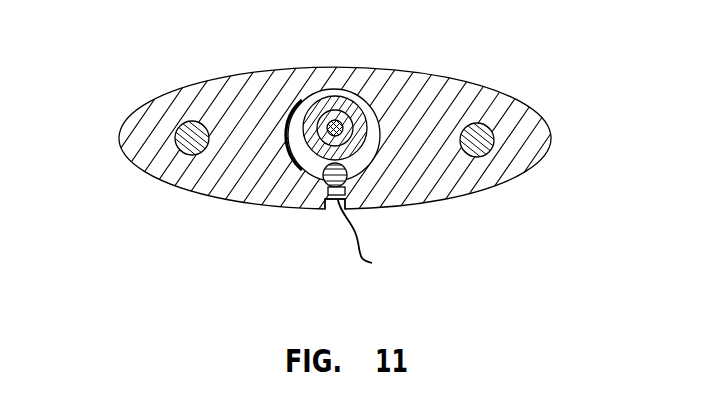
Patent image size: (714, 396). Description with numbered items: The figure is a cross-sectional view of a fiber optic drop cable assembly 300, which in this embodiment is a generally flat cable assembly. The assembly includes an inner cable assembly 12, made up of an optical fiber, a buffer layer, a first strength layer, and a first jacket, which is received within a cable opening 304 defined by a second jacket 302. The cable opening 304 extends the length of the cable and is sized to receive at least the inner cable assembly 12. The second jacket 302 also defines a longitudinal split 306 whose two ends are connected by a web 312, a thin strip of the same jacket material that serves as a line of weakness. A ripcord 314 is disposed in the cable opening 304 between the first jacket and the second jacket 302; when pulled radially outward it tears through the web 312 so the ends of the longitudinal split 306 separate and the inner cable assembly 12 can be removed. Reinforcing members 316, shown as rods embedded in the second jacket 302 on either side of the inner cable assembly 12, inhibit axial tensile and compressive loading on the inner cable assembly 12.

The fiber optic drop cable assembly 300 is at (364, 159).
The second jacket 302 is at (530, 110).
The reinforcing members 316 is at (175, 143).
The inner cable assembly 12 is at (376, 117).
The cable opening 304 is at (366, 172).
The ripcord 314 is at (323, 183).
The web 312 is at (375, 239).
The longitudinal split 306 is at (323, 223).